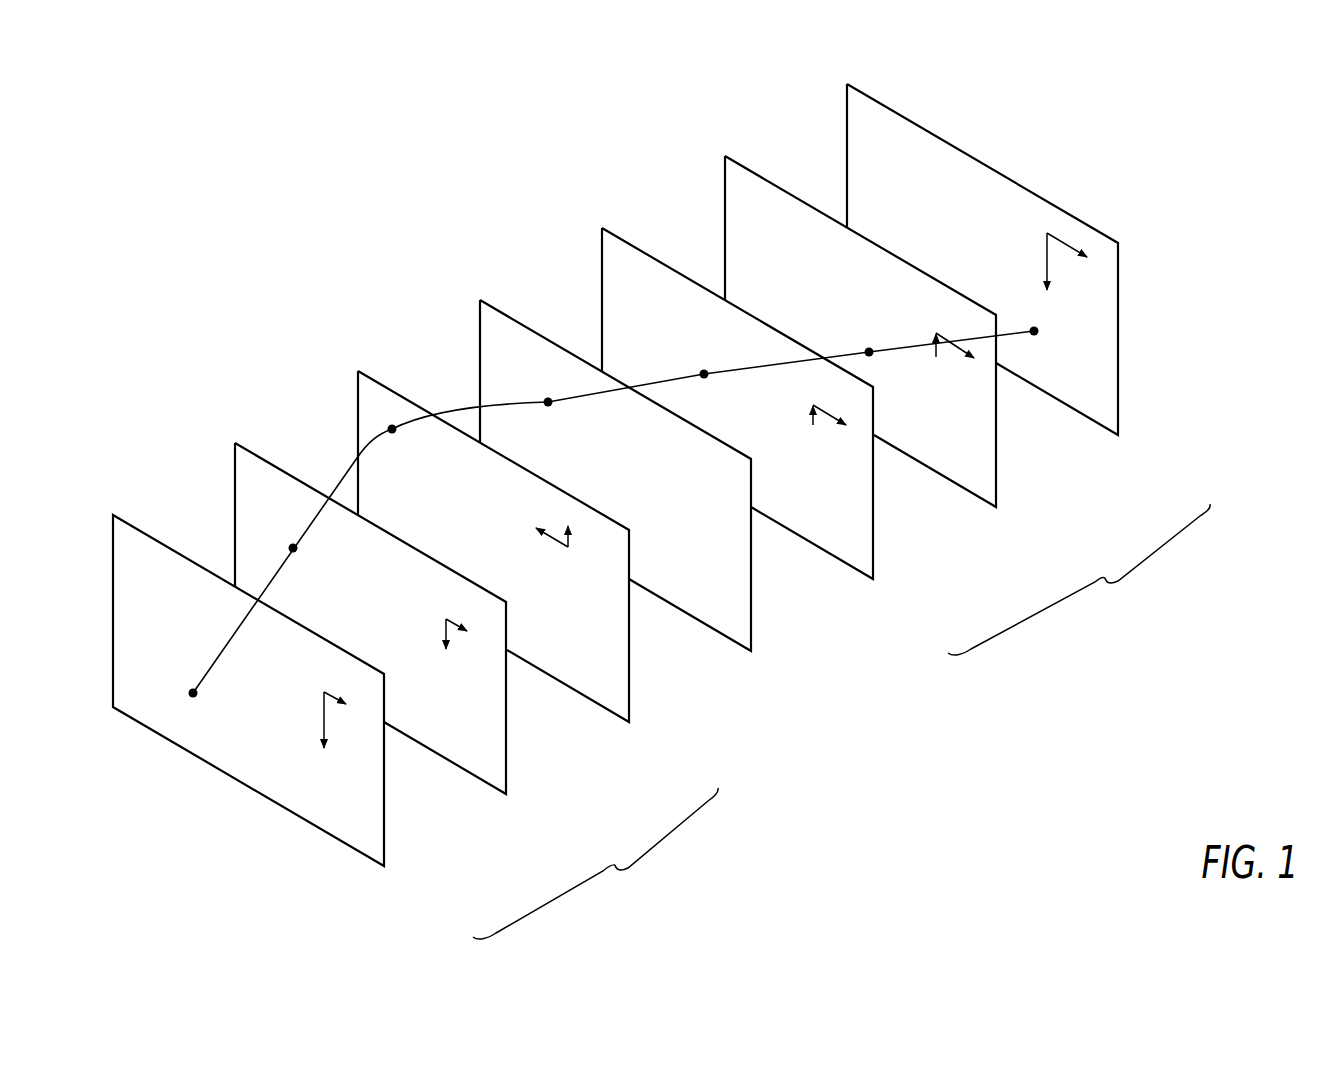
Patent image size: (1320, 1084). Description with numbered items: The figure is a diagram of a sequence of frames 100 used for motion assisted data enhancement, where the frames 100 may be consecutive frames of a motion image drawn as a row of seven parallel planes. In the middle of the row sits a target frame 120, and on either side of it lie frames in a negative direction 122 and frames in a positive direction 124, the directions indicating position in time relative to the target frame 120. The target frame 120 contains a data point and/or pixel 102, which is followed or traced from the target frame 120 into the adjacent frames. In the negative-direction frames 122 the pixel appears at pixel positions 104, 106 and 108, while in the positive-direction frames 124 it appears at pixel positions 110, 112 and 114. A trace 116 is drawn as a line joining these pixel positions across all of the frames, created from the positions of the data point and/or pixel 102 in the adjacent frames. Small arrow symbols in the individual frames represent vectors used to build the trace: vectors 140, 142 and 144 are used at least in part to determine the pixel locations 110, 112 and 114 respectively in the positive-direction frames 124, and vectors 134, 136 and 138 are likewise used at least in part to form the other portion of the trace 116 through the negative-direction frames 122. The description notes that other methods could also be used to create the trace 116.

The sequence of frames 100 is at (1164, 142).
The data point and/or pixel 102 is at (549, 386).
The pixel position 104 is at (379, 421).
The pixel position 106 is at (281, 537).
The pixel position 108 is at (181, 681).
The pixel position 110 is at (699, 361).
The pixel position 112 is at (861, 338).
The pixel position 114 is at (1029, 316).
The trace 116 is at (465, 406).
The target frame 120 is at (771, 669).
The frames in negative direction 122 is at (605, 906).
The frames in positive direction 124 is at (1104, 627).
The vector 134 is at (568, 558).
The vector 136 is at (460, 655).
The vector 138 is at (340, 738).
The vector 140 is at (829, 442).
The vector 142 is at (951, 367).
The vector 144 is at (1086, 316).